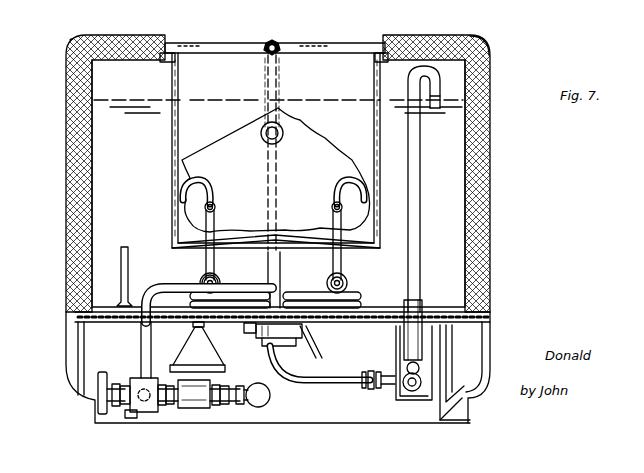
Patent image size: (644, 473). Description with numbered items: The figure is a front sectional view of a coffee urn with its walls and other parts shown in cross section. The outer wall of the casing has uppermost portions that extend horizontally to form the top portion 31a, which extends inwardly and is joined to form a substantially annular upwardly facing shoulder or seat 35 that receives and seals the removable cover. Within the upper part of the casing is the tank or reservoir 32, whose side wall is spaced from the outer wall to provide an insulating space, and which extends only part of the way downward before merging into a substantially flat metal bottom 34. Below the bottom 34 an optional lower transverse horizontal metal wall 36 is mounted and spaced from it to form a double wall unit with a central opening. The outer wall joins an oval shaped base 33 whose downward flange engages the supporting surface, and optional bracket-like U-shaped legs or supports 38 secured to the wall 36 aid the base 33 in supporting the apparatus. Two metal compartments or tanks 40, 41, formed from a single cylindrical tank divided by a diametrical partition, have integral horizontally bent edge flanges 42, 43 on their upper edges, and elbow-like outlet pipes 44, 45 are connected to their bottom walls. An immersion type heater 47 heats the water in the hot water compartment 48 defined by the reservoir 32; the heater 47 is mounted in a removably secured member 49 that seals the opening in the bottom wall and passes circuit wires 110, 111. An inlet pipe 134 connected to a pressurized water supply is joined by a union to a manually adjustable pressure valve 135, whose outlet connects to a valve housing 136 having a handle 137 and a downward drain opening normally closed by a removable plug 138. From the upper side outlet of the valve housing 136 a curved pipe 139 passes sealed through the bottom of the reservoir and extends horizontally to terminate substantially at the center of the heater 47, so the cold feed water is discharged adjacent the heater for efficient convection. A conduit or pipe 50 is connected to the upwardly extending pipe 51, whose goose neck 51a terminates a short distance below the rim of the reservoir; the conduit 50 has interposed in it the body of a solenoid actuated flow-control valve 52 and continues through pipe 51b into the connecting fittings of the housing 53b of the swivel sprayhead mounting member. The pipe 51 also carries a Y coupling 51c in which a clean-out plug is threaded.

The top portion 31a is at (494, 47).
The tank or reservoir 32 is at (493, 206).
The base 33 is at (96, 409).
The bottom 34 is at (428, 304).
The shoulder or seat 35 is at (158, 40).
The lower transverse horizontal metal wall 36 is at (92, 330).
The U-shaped leg or support 38 is at (472, 338).
The metal compartment or tank 40 is at (172, 142).
The metal compartment or tank 41 is at (370, 148).
The horizontally bent edge flange 42 is at (178, 52).
The horizontally bent edge flange 43 is at (382, 44).
The elbow-like outlet pipe 44 is at (204, 270).
The elbow-like outlet pipe 45 is at (345, 266).
The heater 47 is at (362, 298).
The hot water compartment 48 is at (246, 275).
The removably secured member 49 is at (306, 327).
The conduit or pipe 50 is at (322, 386).
The upwardly extending pipe 51 is at (424, 216).
The goose neck 51a is at (452, 89).
The pipe 51b is at (276, 282).
The Y coupling 51c is at (440, 356).
The solenoid actuated flow-control valve 52 is at (424, 392).
The housing 53b is at (278, 44).
The circuit wire 110 is at (272, 344).
The circuit wire 111 is at (316, 356).
The inlet pipe 134 is at (268, 404).
The pressure valve 135 is at (200, 410).
The valve housing 136 is at (150, 412).
The handle 137 is at (104, 380).
The removable plug 138 is at (131, 419).
The curved pipe 139 is at (150, 272).